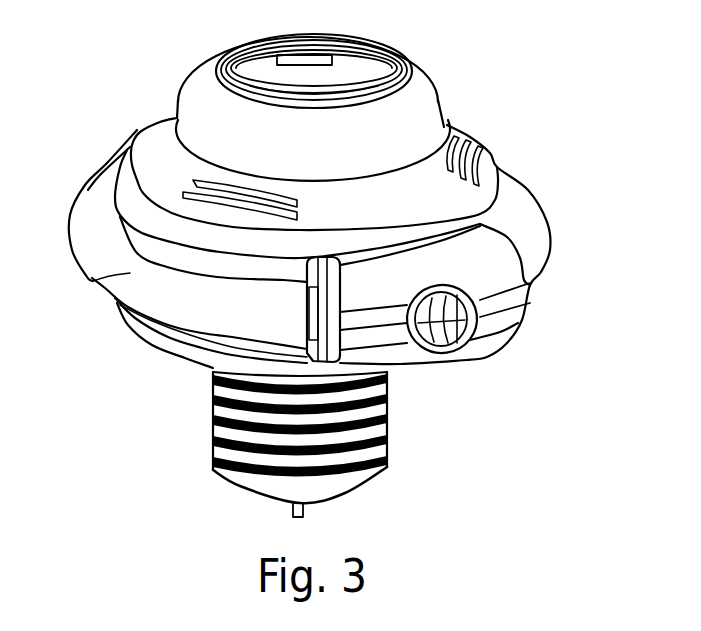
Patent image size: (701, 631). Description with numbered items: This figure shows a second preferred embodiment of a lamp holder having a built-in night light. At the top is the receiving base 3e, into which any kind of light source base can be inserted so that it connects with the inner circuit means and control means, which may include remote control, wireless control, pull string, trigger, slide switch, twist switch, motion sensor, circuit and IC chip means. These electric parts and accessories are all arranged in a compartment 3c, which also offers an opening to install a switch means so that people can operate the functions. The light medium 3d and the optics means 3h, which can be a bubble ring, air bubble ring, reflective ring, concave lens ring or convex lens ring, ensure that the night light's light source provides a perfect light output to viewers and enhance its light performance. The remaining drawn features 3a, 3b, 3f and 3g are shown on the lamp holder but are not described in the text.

The housing wall 3a is at (128, 175).
The threaded base 3b is at (387, 462).
The compartment 3c is at (470, 351).
The light medium 3d is at (93, 281).
The receiving base 3e is at (273, 55).
The vent slots 3f is at (152, 127).
The lower body 3g is at (154, 338).
The optics means 3h is at (533, 248).